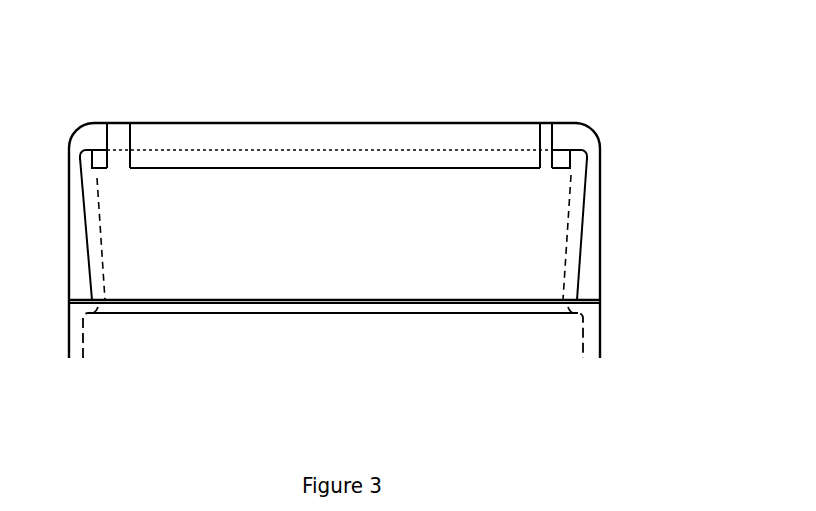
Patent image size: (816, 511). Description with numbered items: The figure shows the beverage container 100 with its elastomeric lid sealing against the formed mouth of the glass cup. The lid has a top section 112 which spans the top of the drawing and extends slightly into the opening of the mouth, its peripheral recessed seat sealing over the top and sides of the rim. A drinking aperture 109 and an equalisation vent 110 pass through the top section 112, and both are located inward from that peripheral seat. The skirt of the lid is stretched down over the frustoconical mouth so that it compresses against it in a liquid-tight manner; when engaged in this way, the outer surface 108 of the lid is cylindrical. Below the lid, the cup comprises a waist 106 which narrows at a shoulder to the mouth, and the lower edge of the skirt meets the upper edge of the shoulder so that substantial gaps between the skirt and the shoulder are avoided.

The beverage container 100 is at (655, 92).
The waist 106 is at (602, 352).
The outer surface 108 is at (600, 243).
The drinking aperture 109 is at (115, 122).
The equalisation vent 110 is at (545, 122).
The top section 112 is at (372, 122).